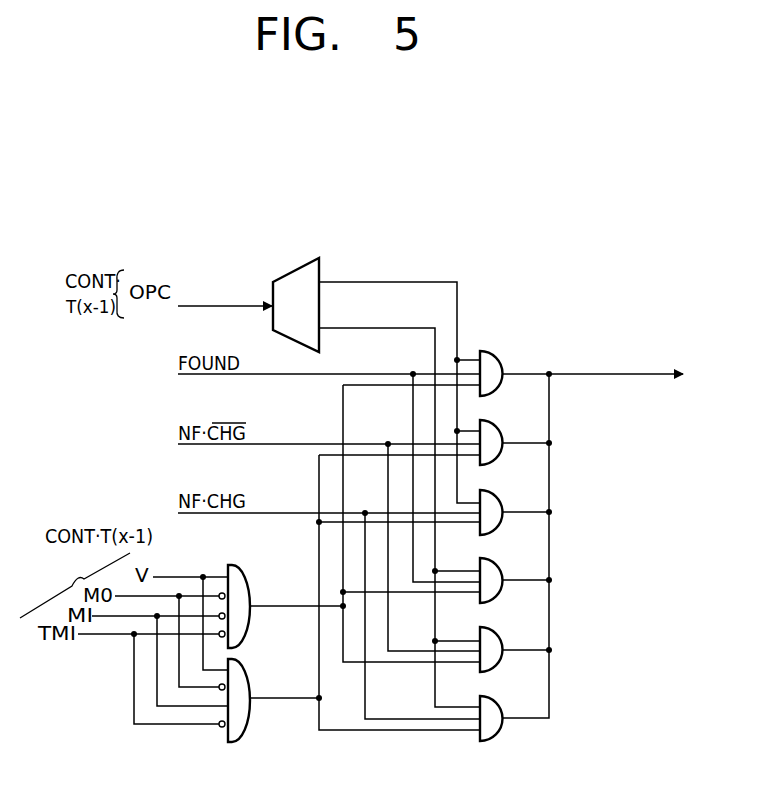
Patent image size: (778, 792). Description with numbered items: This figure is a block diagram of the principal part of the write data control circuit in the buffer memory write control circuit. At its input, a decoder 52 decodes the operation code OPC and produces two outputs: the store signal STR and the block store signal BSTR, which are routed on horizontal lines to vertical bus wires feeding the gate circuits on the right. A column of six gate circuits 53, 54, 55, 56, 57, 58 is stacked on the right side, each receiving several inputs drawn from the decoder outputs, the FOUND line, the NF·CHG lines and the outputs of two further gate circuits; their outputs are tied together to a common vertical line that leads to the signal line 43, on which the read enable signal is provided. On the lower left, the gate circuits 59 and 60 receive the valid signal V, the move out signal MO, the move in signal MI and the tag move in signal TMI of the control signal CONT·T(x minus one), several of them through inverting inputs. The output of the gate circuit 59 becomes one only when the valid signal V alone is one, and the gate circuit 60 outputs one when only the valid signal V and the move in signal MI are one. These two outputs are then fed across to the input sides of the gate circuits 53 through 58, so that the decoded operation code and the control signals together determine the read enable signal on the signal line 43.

The signal line 43 is at (632, 378).
The decoder 52 is at (319, 342).
The gate circuit 53 is at (502, 362).
The gate circuit 54 is at (502, 431).
The gate circuit 55 is at (502, 501).
The gate circuit 56 is at (502, 569).
The gate circuit 57 is at (502, 638).
The gate circuit 58 is at (502, 707).
The gate circuit 59 is at (250, 592).
The gate circuit 60 is at (251, 688).